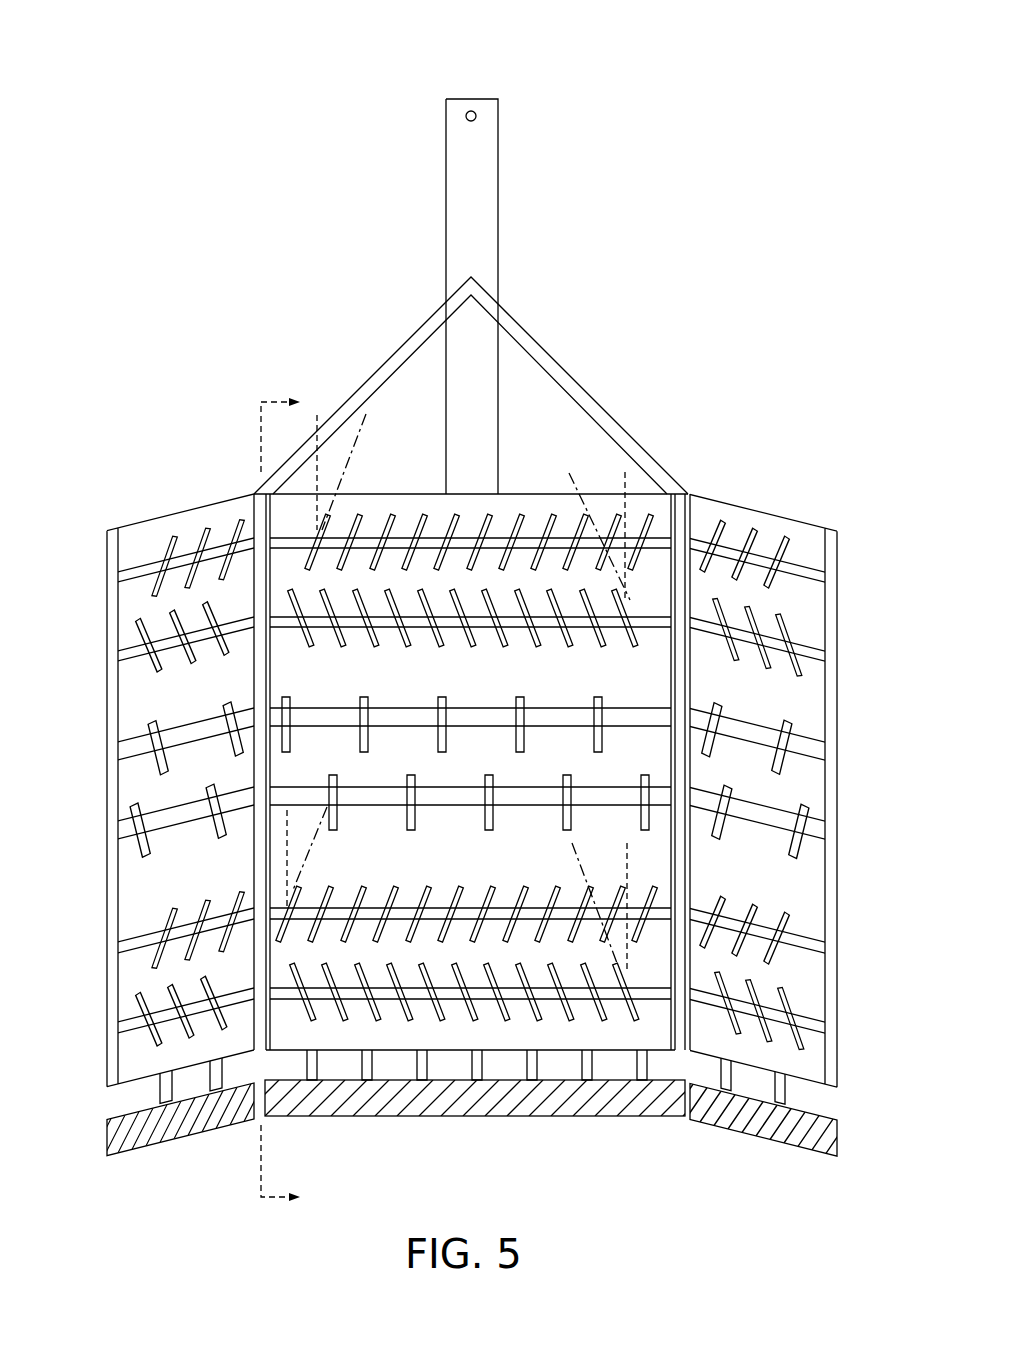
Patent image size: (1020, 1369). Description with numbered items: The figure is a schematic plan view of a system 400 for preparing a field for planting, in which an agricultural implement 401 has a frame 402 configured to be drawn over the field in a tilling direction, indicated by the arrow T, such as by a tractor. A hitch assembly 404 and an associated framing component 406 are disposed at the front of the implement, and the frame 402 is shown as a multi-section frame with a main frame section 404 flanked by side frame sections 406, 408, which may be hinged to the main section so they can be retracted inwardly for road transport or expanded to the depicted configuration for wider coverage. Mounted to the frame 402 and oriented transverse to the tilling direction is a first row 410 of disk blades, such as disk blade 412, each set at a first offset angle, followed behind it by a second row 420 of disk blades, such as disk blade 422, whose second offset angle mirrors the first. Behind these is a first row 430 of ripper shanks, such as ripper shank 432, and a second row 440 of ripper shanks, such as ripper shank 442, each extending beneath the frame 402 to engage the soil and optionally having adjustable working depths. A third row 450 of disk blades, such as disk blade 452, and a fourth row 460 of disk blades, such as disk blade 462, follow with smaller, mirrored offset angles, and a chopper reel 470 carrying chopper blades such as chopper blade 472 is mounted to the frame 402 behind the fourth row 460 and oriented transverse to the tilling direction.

The system 400 is at (795, 100).
The agricultural implement 401 is at (704, 288).
The frame 402 is at (641, 494).
The hitch assembly 404 is at (512, 148).
The framing component 406 is at (162, 494).
The side frame section 408 is at (786, 494).
The first row of disk blades 410 is at (662, 522).
The disk blade 412 is at (303, 562).
The second row of disk blades 420 is at (643, 651).
The disk blade 422 is at (308, 648).
The first row of ripper shanks 430 is at (610, 697).
The ripper shank 432 is at (281, 699).
The second row of ripper shanks 440 is at (666, 777).
The ripper shank 442 is at (333, 797).
The third row of disk blades 450 is at (659, 899).
The disk blade 452 is at (299, 888).
The fourth row of disk blades 460 is at (648, 1008).
The disk blade 462 is at (305, 1012).
The chopper reel 470 is at (650, 1128).
The chopper blade 472 is at (387, 1103).